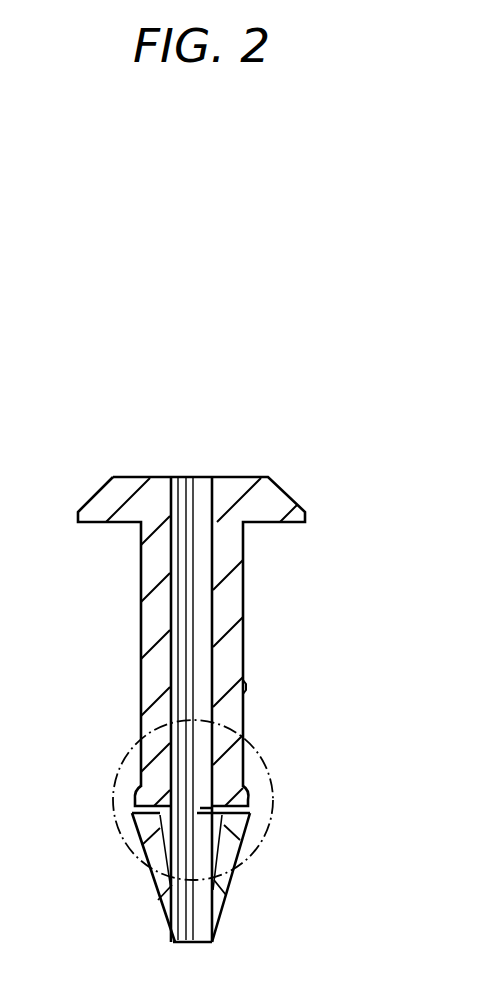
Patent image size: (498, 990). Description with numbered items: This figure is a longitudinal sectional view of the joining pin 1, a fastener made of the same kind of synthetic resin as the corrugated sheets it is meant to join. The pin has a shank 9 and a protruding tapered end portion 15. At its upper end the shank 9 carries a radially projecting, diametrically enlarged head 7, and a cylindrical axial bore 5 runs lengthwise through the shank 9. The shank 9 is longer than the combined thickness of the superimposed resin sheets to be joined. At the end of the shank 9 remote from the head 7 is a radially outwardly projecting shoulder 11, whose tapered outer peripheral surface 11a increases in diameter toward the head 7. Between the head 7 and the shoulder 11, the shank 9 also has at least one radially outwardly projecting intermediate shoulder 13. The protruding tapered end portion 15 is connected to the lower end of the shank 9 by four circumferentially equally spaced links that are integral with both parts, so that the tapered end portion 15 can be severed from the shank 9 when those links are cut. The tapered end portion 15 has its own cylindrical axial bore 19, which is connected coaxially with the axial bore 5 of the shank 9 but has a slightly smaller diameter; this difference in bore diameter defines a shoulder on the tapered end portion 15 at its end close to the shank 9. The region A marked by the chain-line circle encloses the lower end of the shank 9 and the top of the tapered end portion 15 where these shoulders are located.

The joining pin 1 is at (341, 590).
The cylindrical axial bore 5 is at (210, 500).
The head 7 is at (123, 490).
The shank 9 is at (232, 607).
The shoulder 11 is at (275, 783).
The tapered outer peripheral surface 11a is at (130, 813).
The intermediate shoulder 13 is at (245, 687).
The protruding tapered end portion 15 is at (222, 882).
The cylindrical axial bore 19 is at (212, 933).
The enlarged detail region A is at (265, 835).